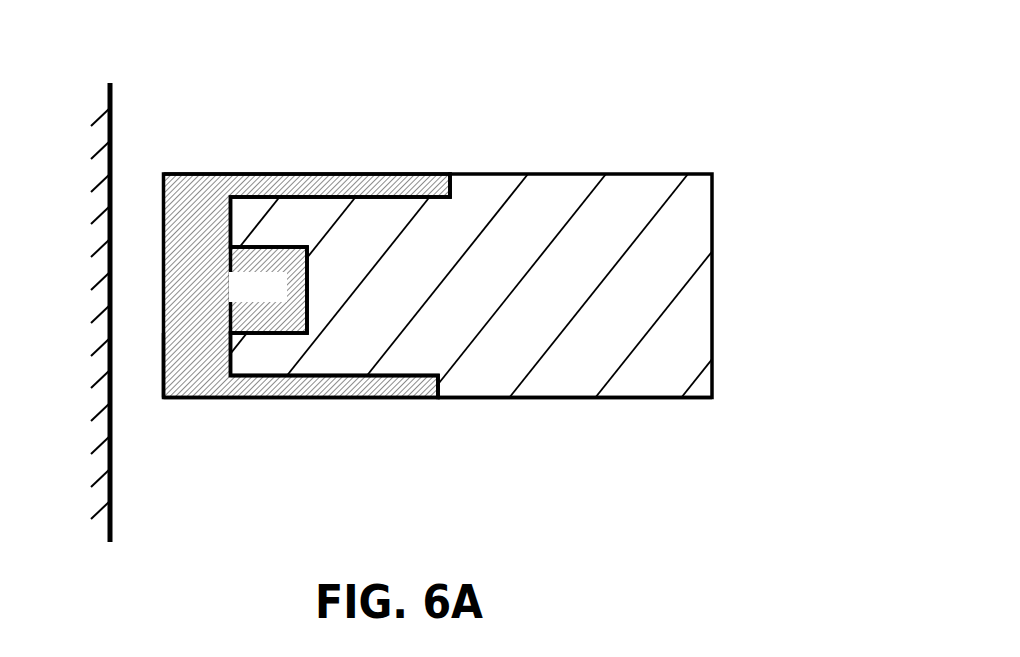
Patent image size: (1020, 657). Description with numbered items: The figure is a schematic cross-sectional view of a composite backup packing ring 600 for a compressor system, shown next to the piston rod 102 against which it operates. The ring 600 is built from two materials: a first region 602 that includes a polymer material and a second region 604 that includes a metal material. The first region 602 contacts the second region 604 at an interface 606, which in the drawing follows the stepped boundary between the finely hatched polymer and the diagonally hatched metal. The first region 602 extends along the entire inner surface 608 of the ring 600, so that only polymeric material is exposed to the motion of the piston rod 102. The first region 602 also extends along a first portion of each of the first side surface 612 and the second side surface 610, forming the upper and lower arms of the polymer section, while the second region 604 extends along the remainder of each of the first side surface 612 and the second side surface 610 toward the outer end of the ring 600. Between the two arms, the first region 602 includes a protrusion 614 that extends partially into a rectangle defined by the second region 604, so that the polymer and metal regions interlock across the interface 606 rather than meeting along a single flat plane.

The piston rod 102 is at (111, 337).
The composite backup packing ring 600 is at (447, 255).
The first region 602 is at (162, 248).
The second region 604 is at (600, 282).
The interface 606 is at (273, 377).
The inner surface 608 is at (162, 362).
The second side surface 610 is at (460, 398).
The first side surface 612 is at (323, 173).
The protrusion 614 is at (285, 300).